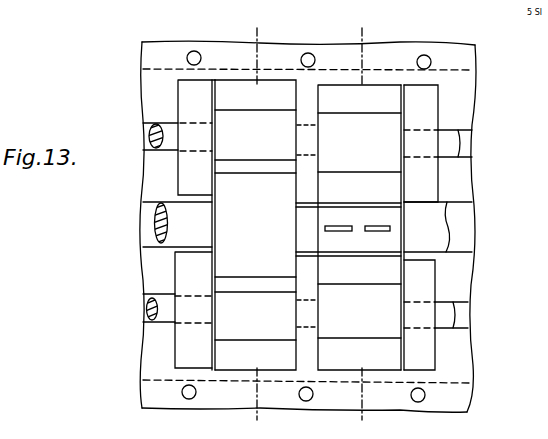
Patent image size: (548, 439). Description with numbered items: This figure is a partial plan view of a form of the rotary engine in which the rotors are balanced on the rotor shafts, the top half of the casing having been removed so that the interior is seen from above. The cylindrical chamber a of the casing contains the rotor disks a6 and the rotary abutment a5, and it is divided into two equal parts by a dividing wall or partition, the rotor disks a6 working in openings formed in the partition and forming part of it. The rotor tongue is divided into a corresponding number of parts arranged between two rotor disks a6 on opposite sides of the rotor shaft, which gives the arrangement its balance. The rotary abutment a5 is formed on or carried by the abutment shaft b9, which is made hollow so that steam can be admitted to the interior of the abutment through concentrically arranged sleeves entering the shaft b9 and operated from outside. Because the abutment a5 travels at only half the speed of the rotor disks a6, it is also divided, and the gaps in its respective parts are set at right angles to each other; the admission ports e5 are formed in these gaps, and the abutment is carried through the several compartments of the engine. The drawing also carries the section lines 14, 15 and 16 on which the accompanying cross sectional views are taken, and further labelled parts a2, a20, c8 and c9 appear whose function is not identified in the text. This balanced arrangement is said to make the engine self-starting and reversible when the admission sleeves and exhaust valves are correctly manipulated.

The section line 14 is at (424, 80).
The section line 15 is at (359, 222).
The section line 16 is at (254, 222).
The cylindrical chamber a is at (220, 60).
The cross bars a2 is at (258, 168).
The rotary abutment a5 is at (483, 165).
The rotor disk a6 is at (488, 338).
The central strip a20 is at (315, 250).
The abutment shaft b9 is at (490, 210).
The slot c8 is at (488, 122).
The slot c9 is at (490, 317).
The admission port e5 is at (380, 232).